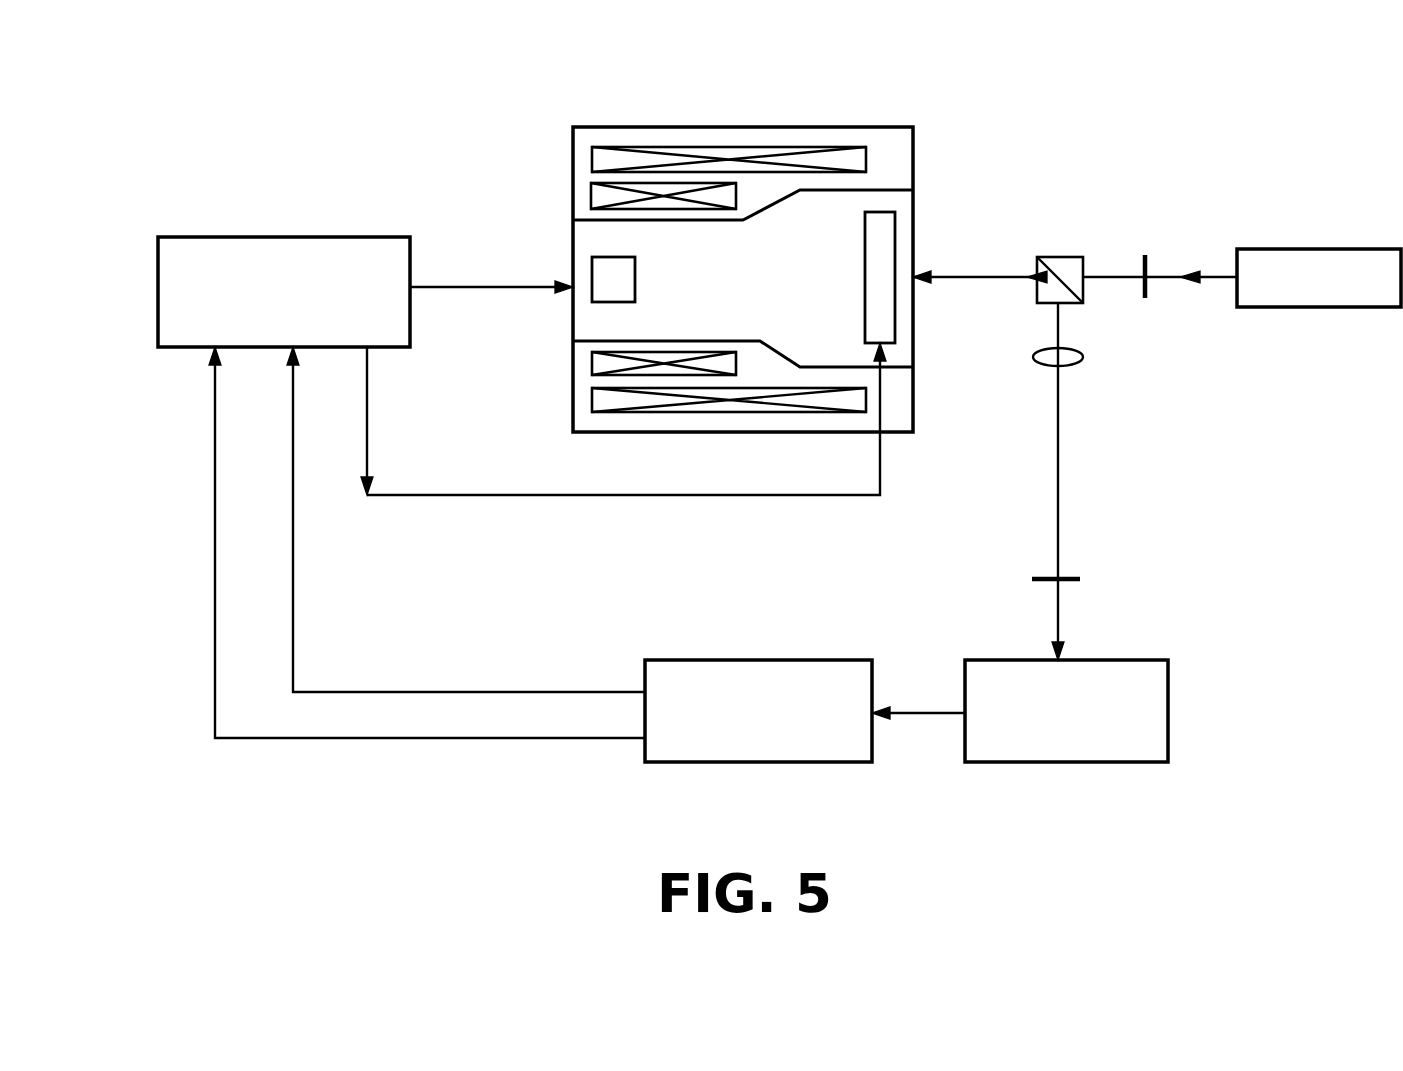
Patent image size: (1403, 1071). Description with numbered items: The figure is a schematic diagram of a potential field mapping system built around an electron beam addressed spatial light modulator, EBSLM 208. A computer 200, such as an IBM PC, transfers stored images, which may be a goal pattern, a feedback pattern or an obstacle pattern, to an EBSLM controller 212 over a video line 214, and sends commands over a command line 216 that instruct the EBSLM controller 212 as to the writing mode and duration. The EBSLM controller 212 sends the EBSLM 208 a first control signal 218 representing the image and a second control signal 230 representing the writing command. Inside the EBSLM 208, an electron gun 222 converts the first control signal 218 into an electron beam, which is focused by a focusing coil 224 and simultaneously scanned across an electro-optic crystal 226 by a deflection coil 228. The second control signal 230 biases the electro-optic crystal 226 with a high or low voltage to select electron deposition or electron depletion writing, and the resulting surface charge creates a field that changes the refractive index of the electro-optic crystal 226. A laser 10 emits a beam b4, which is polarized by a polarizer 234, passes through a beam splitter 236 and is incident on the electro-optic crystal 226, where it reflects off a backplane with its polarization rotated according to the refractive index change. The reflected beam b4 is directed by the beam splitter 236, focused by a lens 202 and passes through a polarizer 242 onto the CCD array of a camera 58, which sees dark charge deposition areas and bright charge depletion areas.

The laser 10 is at (1298, 249).
The camera 58 is at (1143, 660).
The computer 200 is at (785, 660).
The lens 202 is at (1080, 362).
The EBSLM 208 is at (855, 73).
The EBSLM controller 212 is at (210, 237).
The video line 214 is at (466, 519).
The command line 216 is at (427, 563).
The first control signal 218 is at (443, 287).
The electron gun 222 is at (635, 283).
The focusing coil 224 is at (592, 402).
The electro-optic crystal 226 is at (868, 270).
The deflection coil 228 is at (592, 197).
The second control signal 230 is at (547, 497).
The polarizer 234 is at (1145, 257).
The beam splitter 236 is at (1075, 257).
The polarizer 242 is at (1050, 576).
The beam b4 is at (1186, 272).